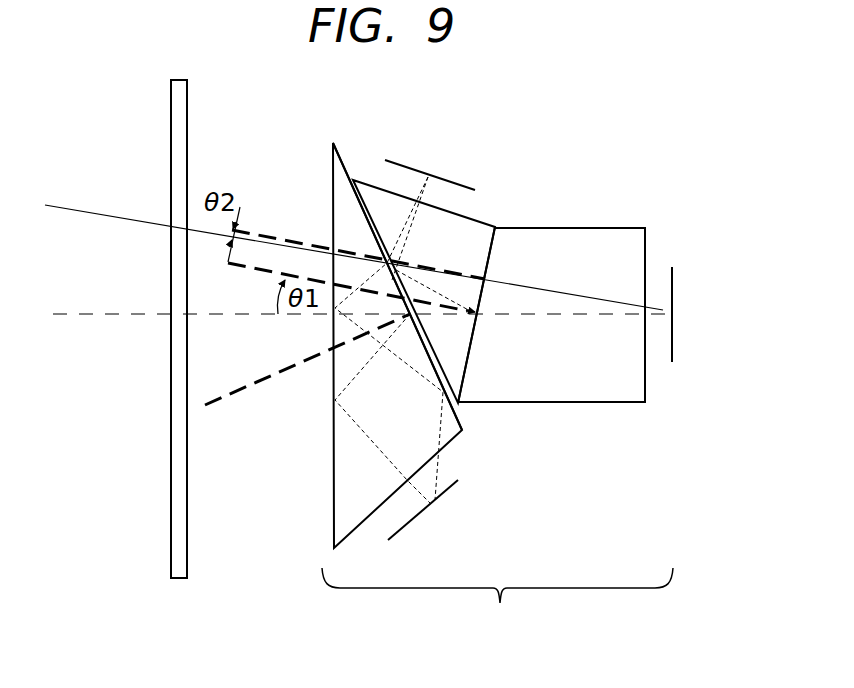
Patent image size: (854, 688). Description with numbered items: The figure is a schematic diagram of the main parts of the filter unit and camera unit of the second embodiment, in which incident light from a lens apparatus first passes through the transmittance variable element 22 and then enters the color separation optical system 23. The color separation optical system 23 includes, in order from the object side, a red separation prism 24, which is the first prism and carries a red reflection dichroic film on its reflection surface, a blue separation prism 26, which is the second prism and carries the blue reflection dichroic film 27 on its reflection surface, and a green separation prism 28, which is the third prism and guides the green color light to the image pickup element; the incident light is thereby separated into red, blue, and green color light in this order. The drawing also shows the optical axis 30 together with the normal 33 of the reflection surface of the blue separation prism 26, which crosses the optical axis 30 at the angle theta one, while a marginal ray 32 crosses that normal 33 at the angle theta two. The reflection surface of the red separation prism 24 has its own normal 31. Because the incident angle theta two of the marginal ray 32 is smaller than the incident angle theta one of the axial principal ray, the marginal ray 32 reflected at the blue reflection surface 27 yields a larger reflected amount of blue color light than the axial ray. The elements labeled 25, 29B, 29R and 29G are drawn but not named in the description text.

The transmittance variable element 22 is at (186, 117).
The color separation optical system 23 is at (497, 602).
The red separation prism 24 is at (447, 441).
The dichroic film 25 is at (462, 430).
The blue separation prism 26 is at (477, 230).
The blue reflection dichroic film 27 is at (495, 243).
The green separation prism 28 is at (622, 388).
The blue light source 29B is at (403, 164).
The red light source 29R is at (443, 493).
The green light source 29G is at (674, 283).
The optical axis 30 is at (90, 320).
The normal 31 is at (245, 390).
The marginal ray 32 is at (98, 215).
The normal 33 is at (297, 240).